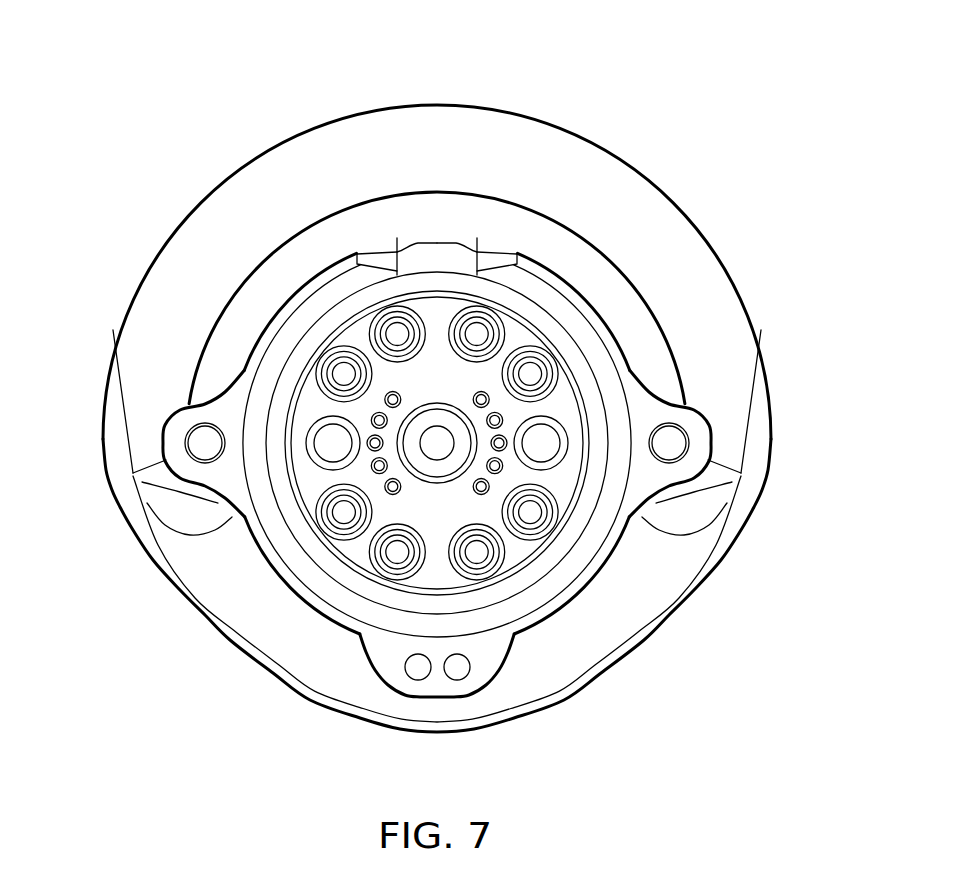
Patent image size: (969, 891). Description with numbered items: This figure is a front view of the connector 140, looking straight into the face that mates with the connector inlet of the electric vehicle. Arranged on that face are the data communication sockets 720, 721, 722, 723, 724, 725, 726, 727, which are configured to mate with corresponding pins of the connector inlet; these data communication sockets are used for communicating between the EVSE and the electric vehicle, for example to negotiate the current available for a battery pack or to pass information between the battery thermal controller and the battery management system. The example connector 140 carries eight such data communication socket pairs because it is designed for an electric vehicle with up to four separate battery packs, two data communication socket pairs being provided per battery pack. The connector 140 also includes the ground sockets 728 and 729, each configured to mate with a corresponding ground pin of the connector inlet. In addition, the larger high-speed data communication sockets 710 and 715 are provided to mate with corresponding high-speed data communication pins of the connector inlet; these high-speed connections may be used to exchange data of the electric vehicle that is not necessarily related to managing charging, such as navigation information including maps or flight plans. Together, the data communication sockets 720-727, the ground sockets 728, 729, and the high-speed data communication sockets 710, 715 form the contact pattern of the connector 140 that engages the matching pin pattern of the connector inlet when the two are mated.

The connector 140 is at (463, 103).
The high-speed data communication socket 710 is at (310, 428).
The high-speed data communication socket 715 is at (567, 427).
The data communication socket 720 is at (387, 393).
The data communication socket 721 is at (373, 415).
The data communication socket 722 is at (355, 447).
The data communication socket 723 is at (371, 469).
The data communication socket 724 is at (486, 394).
The data communication socket 725 is at (501, 416).
The data communication socket 726 is at (522, 443).
The data communication socket 727 is at (502, 470).
The ground socket 728 is at (385, 490).
The ground socket 729 is at (488, 491).